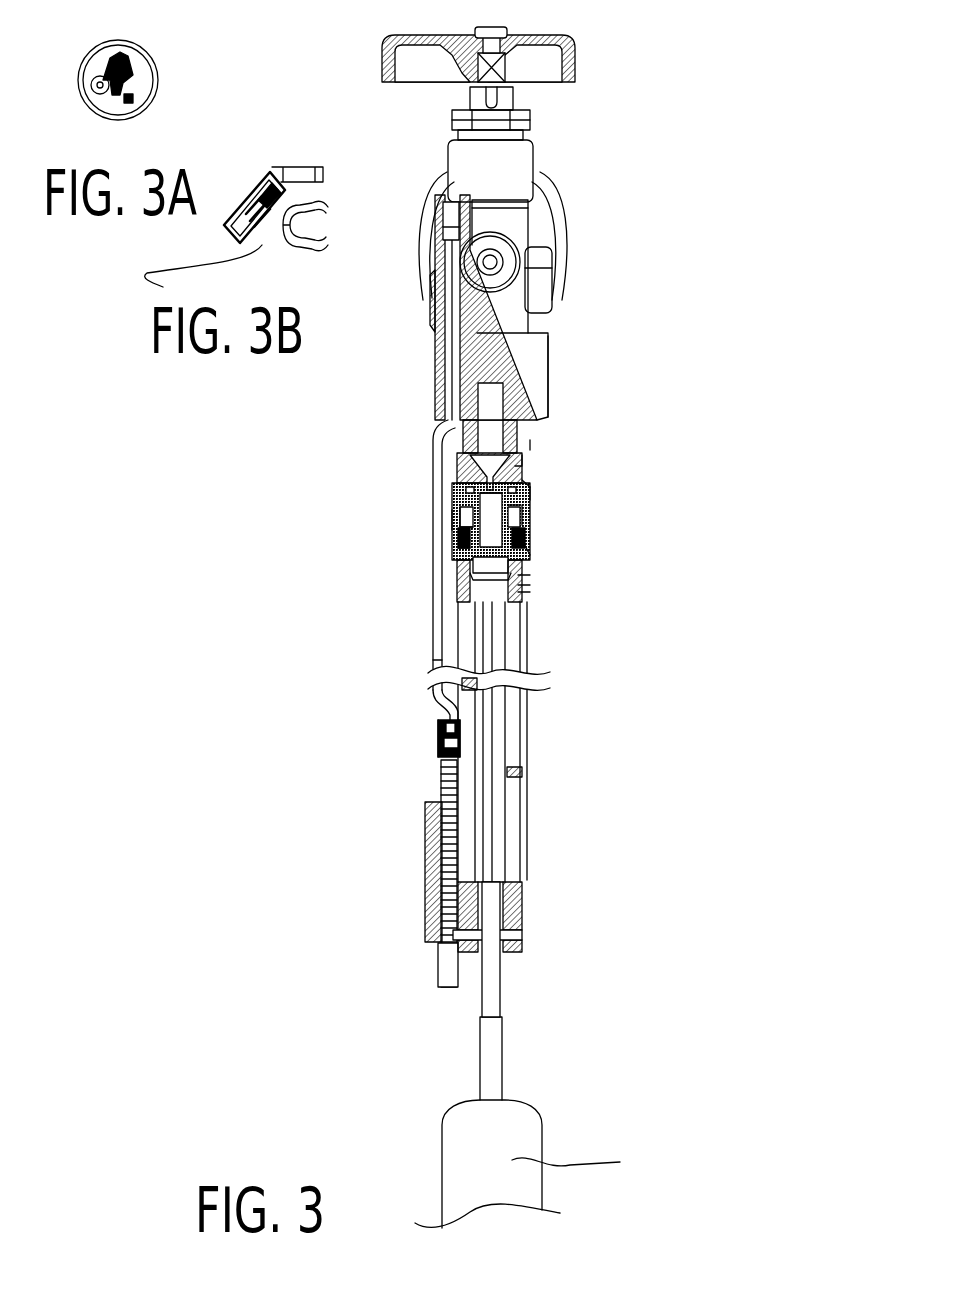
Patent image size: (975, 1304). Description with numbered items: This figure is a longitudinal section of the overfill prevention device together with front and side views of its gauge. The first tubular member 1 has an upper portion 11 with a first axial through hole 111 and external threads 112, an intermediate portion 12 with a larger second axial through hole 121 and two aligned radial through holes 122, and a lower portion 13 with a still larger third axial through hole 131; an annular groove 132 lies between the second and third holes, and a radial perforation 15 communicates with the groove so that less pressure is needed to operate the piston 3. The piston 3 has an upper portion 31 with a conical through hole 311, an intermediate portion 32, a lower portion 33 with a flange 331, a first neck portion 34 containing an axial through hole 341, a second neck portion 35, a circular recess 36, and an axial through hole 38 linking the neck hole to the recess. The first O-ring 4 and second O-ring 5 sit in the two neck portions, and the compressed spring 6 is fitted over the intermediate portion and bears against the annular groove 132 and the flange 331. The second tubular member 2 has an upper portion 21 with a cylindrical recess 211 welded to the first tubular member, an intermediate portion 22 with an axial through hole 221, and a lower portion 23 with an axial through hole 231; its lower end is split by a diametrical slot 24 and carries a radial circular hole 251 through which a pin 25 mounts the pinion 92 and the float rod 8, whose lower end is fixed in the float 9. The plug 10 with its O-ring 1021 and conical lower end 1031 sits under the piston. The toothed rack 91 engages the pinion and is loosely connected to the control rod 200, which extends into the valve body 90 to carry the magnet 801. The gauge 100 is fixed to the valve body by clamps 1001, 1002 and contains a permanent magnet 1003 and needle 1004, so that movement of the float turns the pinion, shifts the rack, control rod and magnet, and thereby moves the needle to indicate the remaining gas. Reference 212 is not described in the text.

In FIG. 3, the first tubular member 1 is at (565, 428).
In FIG. 3, the second tubular member 2 is at (540, 600).
In FIG. 3, the piston 3 is at (460, 518).
In FIG. 3, the first O-ring 4 is at (545, 485).
In FIG. 3, the second O-ring 5 is at (540, 572).
In FIG. 3, the compressed spring 6 is at (540, 520).
In FIG. 3, the float rod 8 is at (495, 995).
In FIG. 3, the float 9 is at (570, 1165).
In FIG. 3, the plug 10 is at (448, 600).
In FIG. 3, the upper portion 11 is at (555, 420).
In FIG. 3, the intermediate portion 12 is at (540, 470).
In FIG. 3, the lower portion 13 is at (540, 560).
In FIG. 3, the radial perforation 15 is at (540, 510).
In FIG. 3, the upper portion 21 is at (535, 585).
In FIG. 3, the intermediate portion 22 is at (550, 615).
In FIG. 3, the lower portion 23 is at (436, 670).
In FIG. 3, the diametrical slot 24 is at (522, 973).
In FIG. 3, the pin 25 is at (522, 905).
In FIG. 3, the upper portion 31 is at (460, 467).
In FIG. 3, the intermediate portion 32 is at (460, 493).
In FIG. 3, the lower portion 33 is at (460, 533).
In FIG. 3, the first neck portion 34 is at (460, 480).
In FIG. 3, the second neck portion 35 is at (458, 583).
In FIG. 3, the circular recess 36 is at (535, 592).
In FIG. 3, the axial through hole 38 is at (535, 578).
In FIG. 3, the valve body 90 is at (520, 297).
In FIG. 3, the toothed rack 91 is at (440, 847).
In FIG. 3, the pinion 92 is at (440, 947).
In FIG. 3A, the gauge 100 is at (138, 57).
In FIG. 3B, the gauge 100 is at (247, 187).
In FIG. 3, the first axial through hole 111 is at (520, 355).
In FIG. 3, the external threads 112 is at (433, 400).
In FIG. 3, the second axial through hole 121 is at (540, 445).
In FIG. 3, the radial through holes 122 is at (545, 495).
In FIG. 3, the third axial through hole 131 is at (545, 548).
In FIG. 3, the annular groove 132 is at (460, 520).
In FIG. 3, the control rod 200 is at (435, 702).
In FIG. 3, the cylindrical recess 211 is at (460, 545).
In FIG. 3, the seal groove 212 is at (460, 565).
In FIG. 3, the axial through hole 221 is at (545, 608).
In FIG. 3, the axial through hole 231 is at (442, 895).
In FIG. 3, the radial circular hole 251 is at (522, 938).
In FIG. 3, the conical through hole 311 is at (475, 435).
In FIG. 3, the flange 331 is at (460, 520).
In FIG. 3, the axial through hole 341 is at (550, 462).
In FIG. 3, the magnet 801 is at (428, 215).
In FIG. 3B, the clamp 1001 is at (283, 167).
In FIG. 3B, the clamp 1002 is at (207, 267).
In FIG. 3B, the permanent magnet 1003 is at (203, 277).
In FIG. 3A, the needle 1004 is at (108, 60).
In FIG. 3B, the needle 1004 is at (240, 193).
In FIG. 3, the O-ring 1021 is at (445, 665).
In FIG. 3, the conical lower end 1031 is at (512, 897).